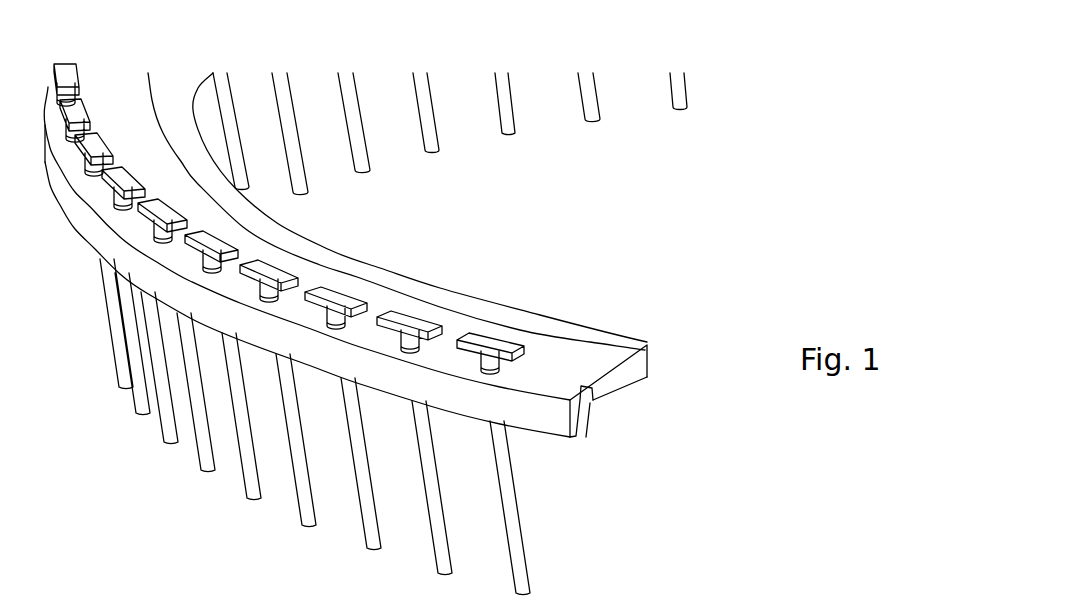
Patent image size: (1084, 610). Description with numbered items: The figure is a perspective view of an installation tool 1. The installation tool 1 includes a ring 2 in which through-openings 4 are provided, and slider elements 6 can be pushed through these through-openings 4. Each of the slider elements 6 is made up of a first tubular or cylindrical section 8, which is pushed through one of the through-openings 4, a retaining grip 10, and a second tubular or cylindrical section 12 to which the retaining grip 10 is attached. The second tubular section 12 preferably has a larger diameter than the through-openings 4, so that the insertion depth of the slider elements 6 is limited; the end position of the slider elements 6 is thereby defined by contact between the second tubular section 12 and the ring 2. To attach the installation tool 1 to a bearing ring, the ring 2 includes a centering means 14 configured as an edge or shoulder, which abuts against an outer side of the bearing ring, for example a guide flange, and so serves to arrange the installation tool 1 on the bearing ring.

The installation tool 1 is at (770, 79).
The ring 2 is at (583, 360).
The through-openings 4 is at (583, 396).
The slider elements 6 is at (496, 336).
The first tubular section 8 is at (518, 538).
The retaining grip 10 is at (468, 334).
The second tubular section 12 is at (505, 361).
The centering means 14 is at (624, 387).